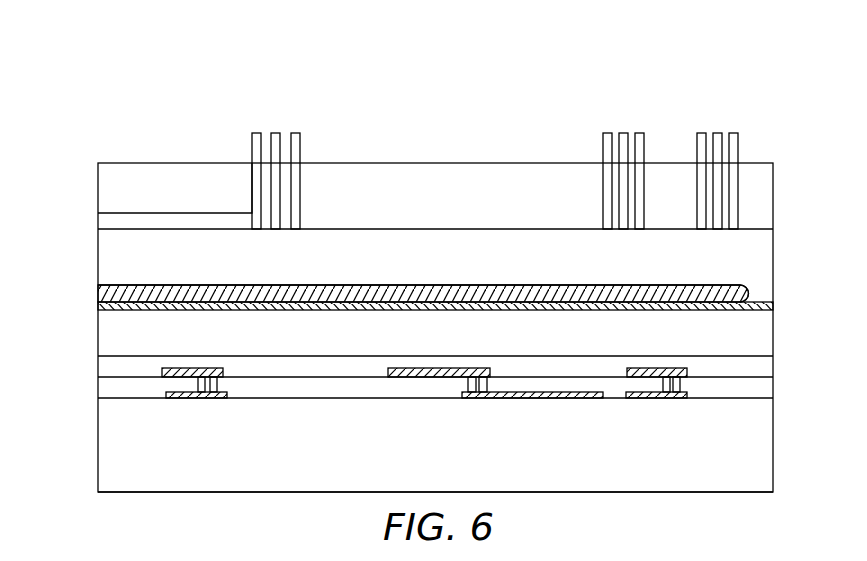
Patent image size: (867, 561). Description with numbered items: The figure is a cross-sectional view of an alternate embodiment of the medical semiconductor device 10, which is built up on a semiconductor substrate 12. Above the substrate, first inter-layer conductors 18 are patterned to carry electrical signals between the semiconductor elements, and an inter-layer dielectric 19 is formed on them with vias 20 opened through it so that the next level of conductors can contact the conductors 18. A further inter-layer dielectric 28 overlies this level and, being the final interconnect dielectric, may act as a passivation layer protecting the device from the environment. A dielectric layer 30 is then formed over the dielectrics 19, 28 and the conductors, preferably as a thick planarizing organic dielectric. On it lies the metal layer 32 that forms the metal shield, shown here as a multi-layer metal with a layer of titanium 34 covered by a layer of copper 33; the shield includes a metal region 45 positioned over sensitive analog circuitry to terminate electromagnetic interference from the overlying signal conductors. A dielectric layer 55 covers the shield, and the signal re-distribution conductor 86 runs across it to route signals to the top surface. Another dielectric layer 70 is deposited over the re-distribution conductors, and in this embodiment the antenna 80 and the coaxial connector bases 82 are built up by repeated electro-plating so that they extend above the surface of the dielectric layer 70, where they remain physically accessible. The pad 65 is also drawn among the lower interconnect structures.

The medical semiconductor device 10 is at (694, 535).
The semiconductor substrate 12 is at (339, 462).
The conductors 18 is at (168, 393).
The inter-layer dielectric 19 is at (97, 390).
The vias 20 is at (218, 385).
The inter-layer dielectric 28 is at (100, 365).
The dielectric layer 30 is at (773, 335).
The metal layer 32 is at (757, 292).
The layer of copper 33 is at (113, 287).
The layer of titanium 34 is at (100, 305).
The metal region 45 is at (478, 285).
The dielectric layer 55 is at (694, 274).
The conductive pad 65 is at (160, 372).
The dielectric layer 70 is at (469, 202).
The antenna 80 is at (723, 103).
The coaxial connector bases 82 is at (277, 113).
The conductor 86 is at (197, 212).